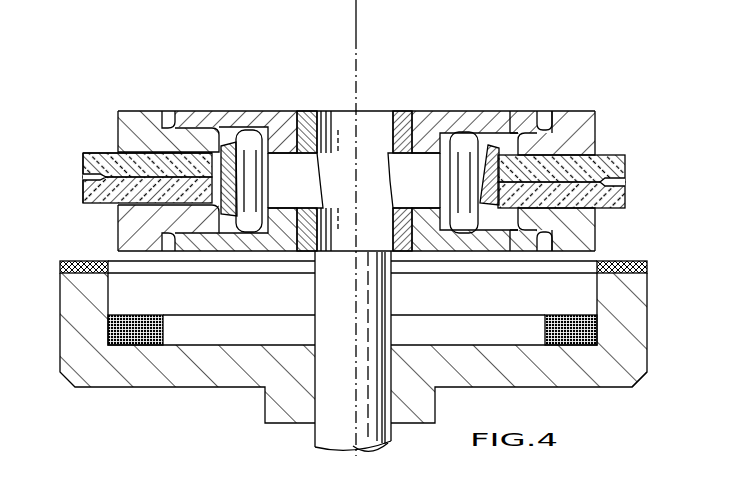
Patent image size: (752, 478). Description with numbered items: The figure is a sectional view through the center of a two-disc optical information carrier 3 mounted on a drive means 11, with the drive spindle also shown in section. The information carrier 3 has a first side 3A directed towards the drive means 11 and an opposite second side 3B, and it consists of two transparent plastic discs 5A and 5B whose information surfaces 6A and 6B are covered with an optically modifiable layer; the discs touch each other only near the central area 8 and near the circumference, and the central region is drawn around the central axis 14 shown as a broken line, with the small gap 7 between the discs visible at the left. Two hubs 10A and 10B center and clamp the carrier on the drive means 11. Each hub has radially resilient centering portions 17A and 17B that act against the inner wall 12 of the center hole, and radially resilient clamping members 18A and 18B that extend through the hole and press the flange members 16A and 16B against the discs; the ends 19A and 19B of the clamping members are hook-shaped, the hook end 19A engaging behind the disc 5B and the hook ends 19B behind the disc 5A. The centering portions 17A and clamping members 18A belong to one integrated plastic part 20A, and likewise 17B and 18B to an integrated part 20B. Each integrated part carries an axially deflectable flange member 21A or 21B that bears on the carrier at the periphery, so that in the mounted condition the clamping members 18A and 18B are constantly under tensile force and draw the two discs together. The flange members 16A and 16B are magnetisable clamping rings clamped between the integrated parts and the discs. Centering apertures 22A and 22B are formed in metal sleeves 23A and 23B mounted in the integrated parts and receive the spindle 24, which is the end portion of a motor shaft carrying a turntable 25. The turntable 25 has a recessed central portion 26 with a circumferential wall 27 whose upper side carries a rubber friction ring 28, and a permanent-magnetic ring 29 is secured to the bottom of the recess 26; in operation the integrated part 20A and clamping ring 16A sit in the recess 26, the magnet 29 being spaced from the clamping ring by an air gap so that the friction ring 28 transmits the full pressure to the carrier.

The information carrier 3 is at (115, 153).
The first side 3A is at (97, 204).
The second side 3B is at (98, 152).
The transparent plastic disc 5A is at (82, 200).
The transparent plastic disc 5B is at (82, 155).
The information surface 6A is at (82, 182).
The information surface 6B is at (82, 174).
The shaft slot 7 is at (96, 177).
The central area 8 is at (109, 148).
The hub 10A is at (597, 253).
The hub 10B is at (563, 115).
The drive means 11 is at (349, 342).
The inner wall 12 is at (225, 232).
The central axis 14 is at (358, 37).
The flange member 16A is at (125, 234).
The flange member 16B is at (139, 120).
The centering portion 17A is at (453, 178).
The centering portion 17B is at (230, 166).
The clamping member 18A is at (452, 198).
The clamping member 18B is at (222, 190).
The hook end 19A is at (498, 142).
The hook end 19B is at (210, 220).
The integrated plastic part 20A is at (453, 252).
The integrated plastic part 20B is at (452, 113).
The flange member 21A is at (539, 254).
The flange member 21B is at (540, 118).
The centering aperture 22A is at (322, 253).
The centering aperture 22B is at (379, 122).
The metal sleeve 23A is at (401, 246).
The metal sleeve 23B is at (402, 115).
The spindle 24 is at (370, 330).
The turntable 25 is at (632, 360).
The recessed central portion 26 is at (587, 305).
The circumferential wall 27 is at (68, 302).
The friction ring 28 is at (640, 268).
The permanent-magnetic ring 29 is at (632, 388).